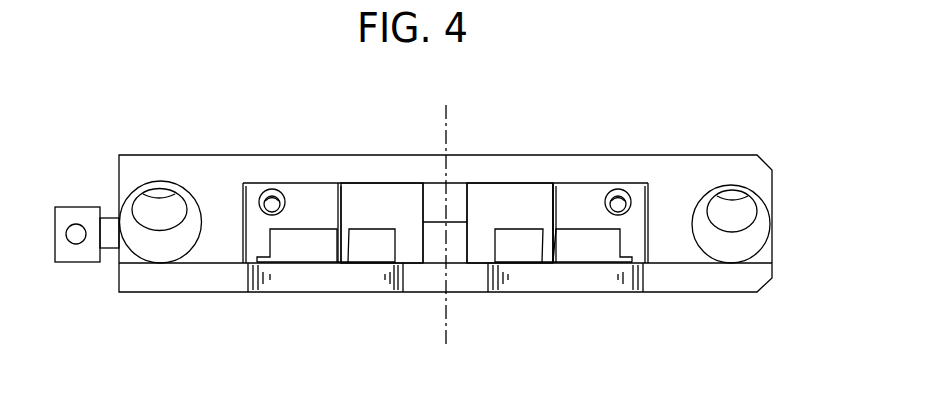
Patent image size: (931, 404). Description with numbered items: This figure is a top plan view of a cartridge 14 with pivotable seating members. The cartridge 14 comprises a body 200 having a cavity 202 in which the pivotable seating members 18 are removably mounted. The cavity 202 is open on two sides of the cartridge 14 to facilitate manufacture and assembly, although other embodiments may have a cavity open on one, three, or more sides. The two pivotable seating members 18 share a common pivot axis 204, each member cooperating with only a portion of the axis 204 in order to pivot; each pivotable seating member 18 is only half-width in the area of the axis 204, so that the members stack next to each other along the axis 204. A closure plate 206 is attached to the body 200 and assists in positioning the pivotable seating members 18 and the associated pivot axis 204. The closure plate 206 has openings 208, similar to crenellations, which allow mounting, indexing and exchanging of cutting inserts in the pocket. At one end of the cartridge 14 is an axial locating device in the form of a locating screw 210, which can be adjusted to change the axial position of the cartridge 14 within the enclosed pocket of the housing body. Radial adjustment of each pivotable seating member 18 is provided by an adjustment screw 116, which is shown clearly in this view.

The cartridge 14 is at (703, 101).
The pivotable seating member 18 is at (382, 215).
The adjustment screw 116 is at (315, 204).
The body 200 is at (227, 186).
The cavity 202 is at (542, 177).
The pivot axis 204 is at (446, 332).
The closure plate 206 is at (170, 280).
The openings 208 is at (292, 288).
The locating screw 210 is at (77, 206).